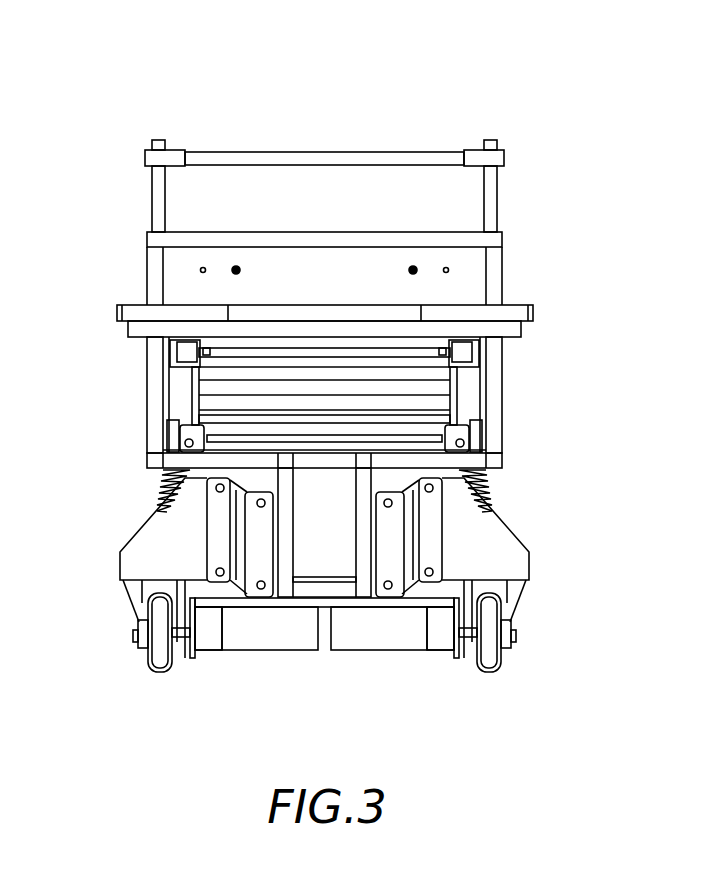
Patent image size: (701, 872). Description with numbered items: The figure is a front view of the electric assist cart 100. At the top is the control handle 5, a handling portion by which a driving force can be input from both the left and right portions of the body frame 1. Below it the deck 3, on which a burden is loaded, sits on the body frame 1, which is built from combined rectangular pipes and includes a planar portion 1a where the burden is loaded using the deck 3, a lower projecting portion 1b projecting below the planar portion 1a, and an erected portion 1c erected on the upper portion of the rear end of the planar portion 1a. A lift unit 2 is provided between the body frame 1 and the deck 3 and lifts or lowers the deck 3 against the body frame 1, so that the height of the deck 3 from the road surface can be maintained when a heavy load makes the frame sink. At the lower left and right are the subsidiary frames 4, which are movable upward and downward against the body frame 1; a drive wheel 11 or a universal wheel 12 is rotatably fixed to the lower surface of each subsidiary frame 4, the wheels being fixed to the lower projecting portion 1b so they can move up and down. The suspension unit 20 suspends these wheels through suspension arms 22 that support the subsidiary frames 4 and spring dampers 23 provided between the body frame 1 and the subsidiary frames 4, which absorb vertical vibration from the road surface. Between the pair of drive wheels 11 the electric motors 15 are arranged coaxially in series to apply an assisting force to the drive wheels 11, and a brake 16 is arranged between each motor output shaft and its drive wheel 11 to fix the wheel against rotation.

The electric assist cart 100 is at (549, 106).
The body frame 1 is at (386, 523).
The planar portion 1a is at (493, 460).
The lower projecting portion 1b is at (328, 587).
The erected portion 1c is at (492, 388).
The lift unit 2 is at (184, 383).
The deck 3 is at (350, 303).
The subsidiary frame 4 is at (137, 553).
The control handle 5 is at (261, 158).
The drive wheel 11 is at (158, 663).
The universal wheel 12 is at (163, 669).
The electric motor 15 is at (277, 637).
The brake 16 is at (207, 637).
The suspension unit 20 is at (324, 599).
The suspension arm 22 is at (247, 598).
The spring damper 23 is at (163, 485).